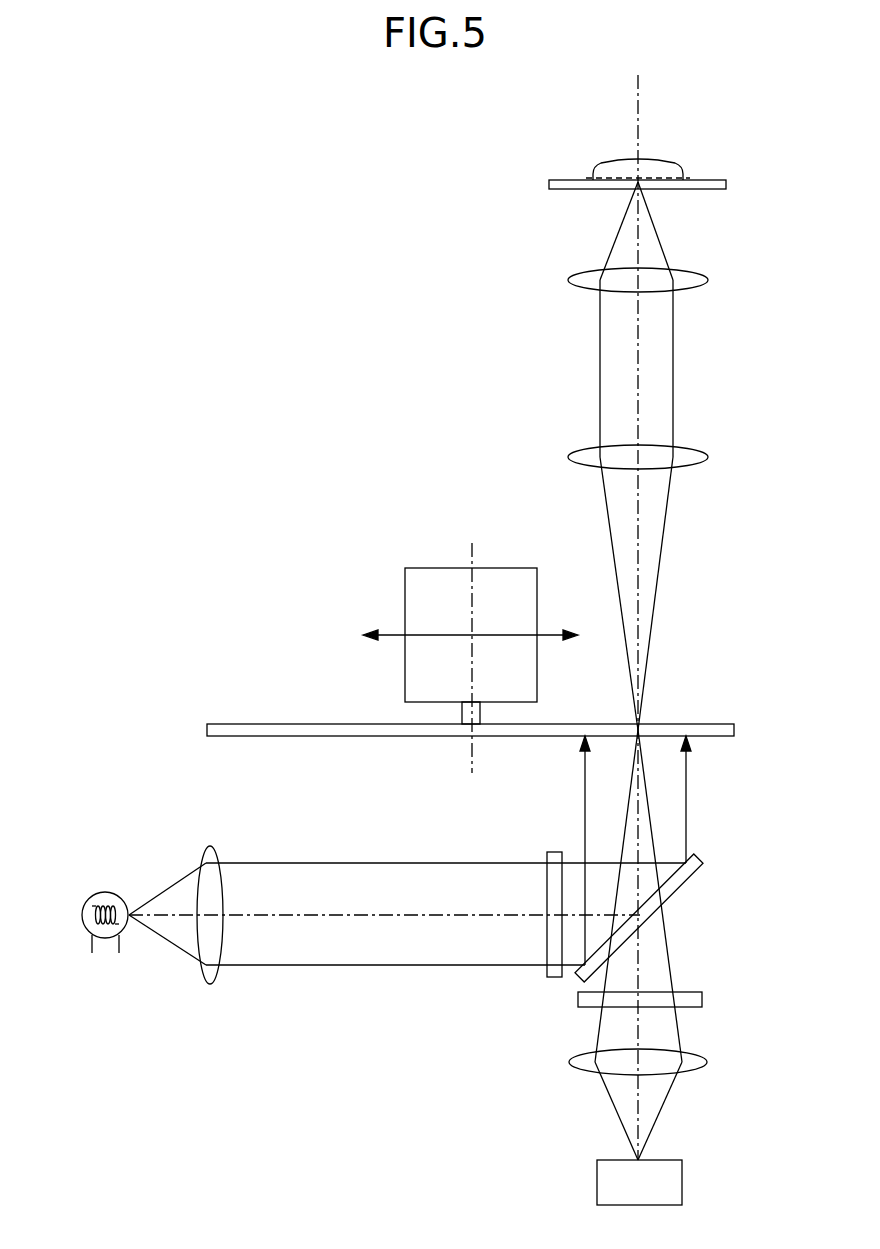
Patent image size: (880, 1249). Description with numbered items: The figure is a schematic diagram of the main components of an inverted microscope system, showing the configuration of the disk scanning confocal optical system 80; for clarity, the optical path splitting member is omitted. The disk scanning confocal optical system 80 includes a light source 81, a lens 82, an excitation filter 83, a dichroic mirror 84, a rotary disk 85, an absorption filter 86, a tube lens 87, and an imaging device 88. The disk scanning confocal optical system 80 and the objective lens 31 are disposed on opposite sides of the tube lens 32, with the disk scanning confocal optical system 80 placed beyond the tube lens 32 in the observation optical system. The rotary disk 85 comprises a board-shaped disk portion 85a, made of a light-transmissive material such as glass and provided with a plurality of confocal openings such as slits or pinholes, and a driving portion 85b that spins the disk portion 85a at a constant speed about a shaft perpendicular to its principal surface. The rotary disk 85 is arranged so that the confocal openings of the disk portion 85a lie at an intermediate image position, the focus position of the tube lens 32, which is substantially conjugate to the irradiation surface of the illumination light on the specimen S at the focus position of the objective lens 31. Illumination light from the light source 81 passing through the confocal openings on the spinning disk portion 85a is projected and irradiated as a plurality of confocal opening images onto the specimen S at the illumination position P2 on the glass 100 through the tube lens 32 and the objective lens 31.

The glass 100 is at (705, 178).
The specimen S is at (655, 166).
The illumination position P2 is at (611, 180).
The objective lens 31 is at (707, 280).
The tube lens 32 is at (707, 457).
The disk scanning confocal optical system 80 is at (115, 685).
The rotary disk 85 is at (717, 703).
The disk portion 85a is at (258, 733).
The driving portion 85b is at (422, 575).
The light source 81 is at (103, 892).
The lens 82 is at (210, 848).
The excitation filter 83 is at (552, 852).
The dichroic mirror 84 is at (678, 888).
The absorption filter 86 is at (702, 997).
The tube lens 87 is at (707, 1060).
The imaging device 88 is at (668, 1181).